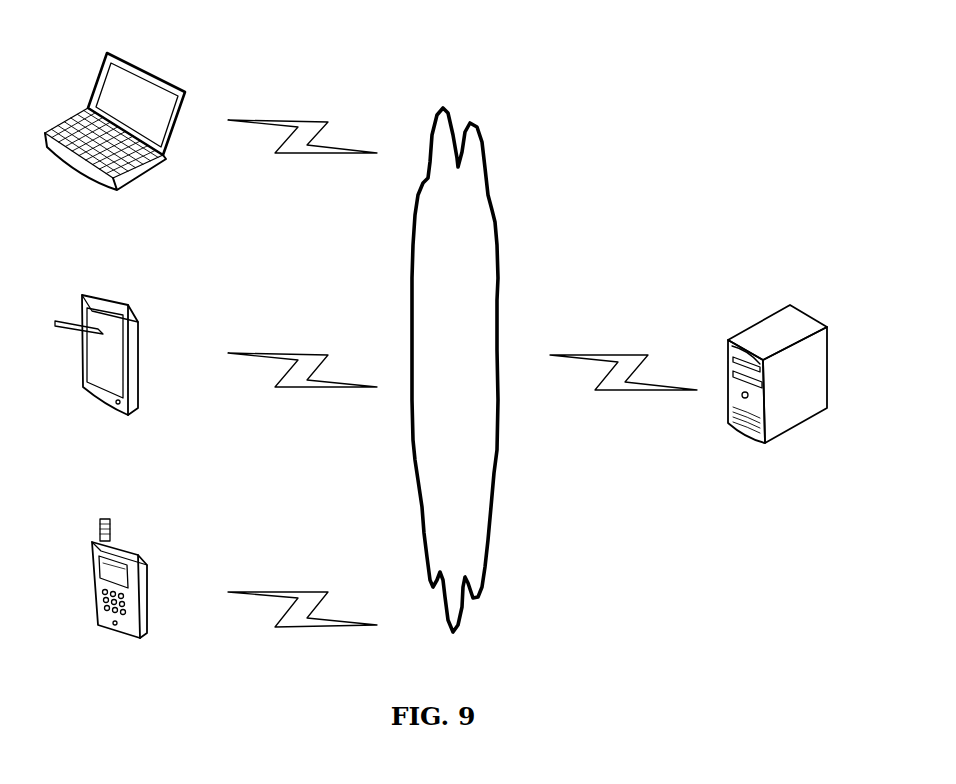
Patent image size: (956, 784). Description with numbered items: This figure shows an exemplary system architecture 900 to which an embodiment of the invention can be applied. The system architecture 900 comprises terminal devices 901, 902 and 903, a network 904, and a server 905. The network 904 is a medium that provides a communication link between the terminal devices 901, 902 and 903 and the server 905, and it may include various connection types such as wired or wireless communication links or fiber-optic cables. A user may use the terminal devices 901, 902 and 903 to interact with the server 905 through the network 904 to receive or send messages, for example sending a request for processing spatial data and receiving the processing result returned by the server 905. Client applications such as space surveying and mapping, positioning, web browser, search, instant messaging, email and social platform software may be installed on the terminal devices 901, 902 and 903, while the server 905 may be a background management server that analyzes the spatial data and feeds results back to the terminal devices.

The system architecture 900 is at (722, 47).
The terminal device 901 is at (119, 597).
The terminal device 902 is at (96, 375).
The terminal device 903 is at (115, 139).
The network 904 is at (455, 370).
The server 905 is at (777, 395).